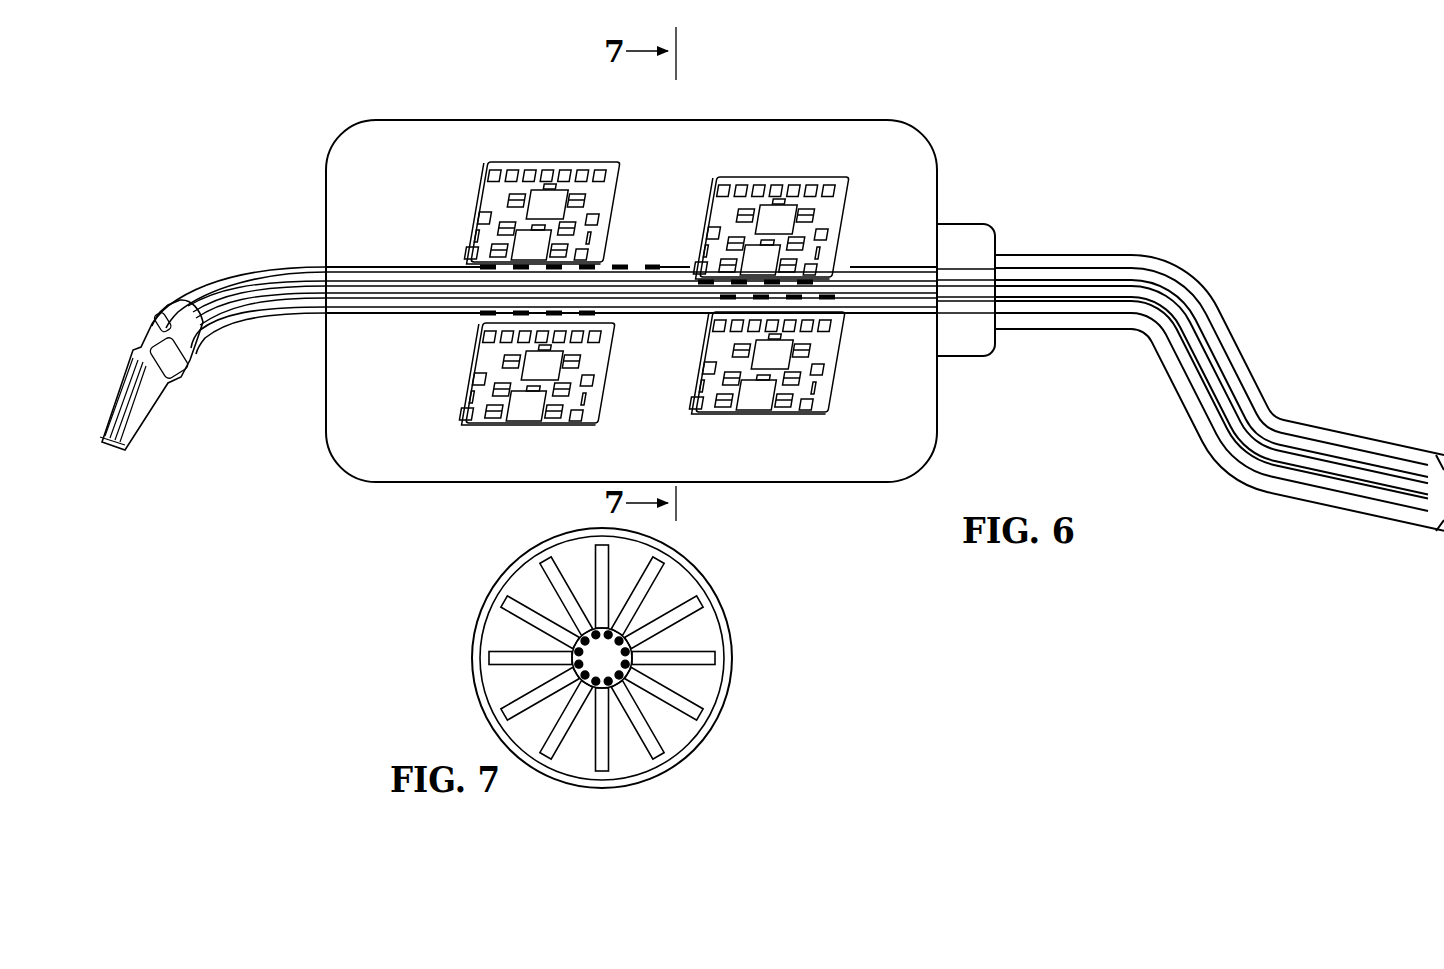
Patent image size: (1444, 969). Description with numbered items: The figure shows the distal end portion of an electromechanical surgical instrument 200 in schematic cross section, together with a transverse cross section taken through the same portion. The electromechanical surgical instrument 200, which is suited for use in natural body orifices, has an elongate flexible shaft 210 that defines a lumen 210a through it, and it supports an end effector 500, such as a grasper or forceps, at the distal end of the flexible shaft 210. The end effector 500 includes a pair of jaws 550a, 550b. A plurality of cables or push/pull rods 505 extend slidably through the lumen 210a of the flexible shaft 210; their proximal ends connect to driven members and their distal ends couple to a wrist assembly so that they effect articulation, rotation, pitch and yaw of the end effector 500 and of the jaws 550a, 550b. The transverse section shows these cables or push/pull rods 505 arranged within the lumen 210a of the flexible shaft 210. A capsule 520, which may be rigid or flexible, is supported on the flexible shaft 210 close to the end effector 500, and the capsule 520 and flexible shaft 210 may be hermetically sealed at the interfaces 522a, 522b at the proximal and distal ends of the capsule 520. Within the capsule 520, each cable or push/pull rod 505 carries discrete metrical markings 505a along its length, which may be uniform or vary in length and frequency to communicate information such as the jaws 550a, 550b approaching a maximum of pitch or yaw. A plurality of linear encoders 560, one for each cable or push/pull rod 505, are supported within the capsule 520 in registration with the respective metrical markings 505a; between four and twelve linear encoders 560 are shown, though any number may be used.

In FIG. 6, the electromechanical surgical instrument 200 is at (1004, 161).
In FIG. 6, the elongate flexible shaft 210 is at (1381, 525).
In FIG. 7, the elongate flexible shaft 210 is at (708, 596).
In FIG. 7, the lumen 210a is at (668, 735).
In FIG. 6, the end effector 500 is at (184, 387).
In FIG. 6, the cables or push/pull rods 505 is at (1195, 282).
In FIG. 7, the cables or push/pull rods 505 is at (633, 650).
In FIG. 6, the metrical markings 505a is at (644, 268).
In FIG. 6, the capsule 520 is at (686, 114).
In FIG. 6, the interface 522a is at (997, 252).
In FIG. 6, the interface 522b is at (327, 263).
In FIG. 6, the jaw 550a is at (130, 432).
In FIG. 6, the jaw 550b is at (105, 425).
In FIG. 6, the linear encoders 560 is at (558, 156).